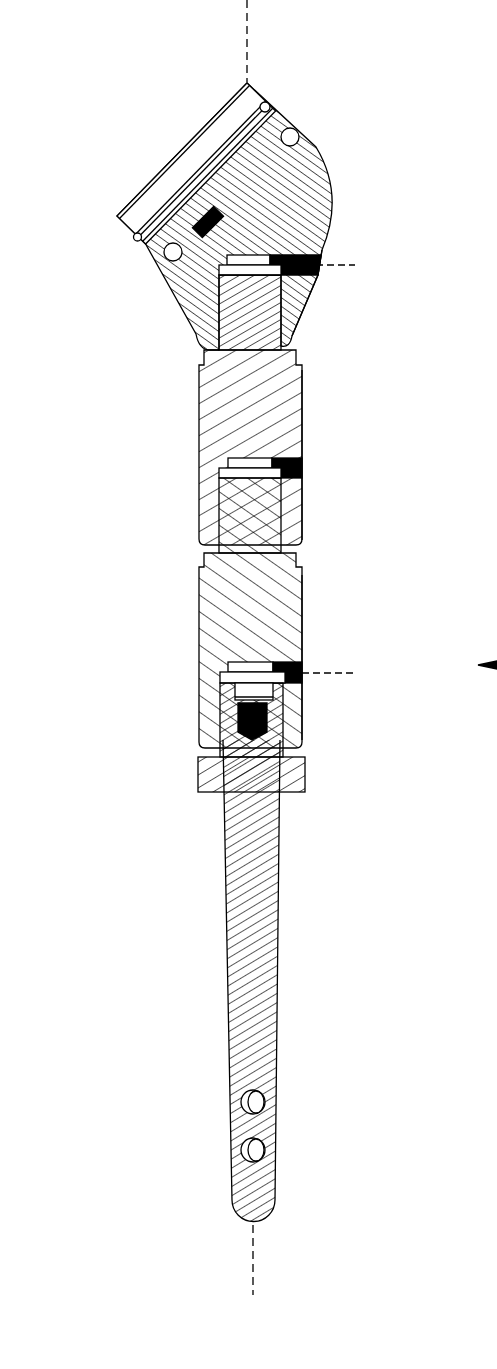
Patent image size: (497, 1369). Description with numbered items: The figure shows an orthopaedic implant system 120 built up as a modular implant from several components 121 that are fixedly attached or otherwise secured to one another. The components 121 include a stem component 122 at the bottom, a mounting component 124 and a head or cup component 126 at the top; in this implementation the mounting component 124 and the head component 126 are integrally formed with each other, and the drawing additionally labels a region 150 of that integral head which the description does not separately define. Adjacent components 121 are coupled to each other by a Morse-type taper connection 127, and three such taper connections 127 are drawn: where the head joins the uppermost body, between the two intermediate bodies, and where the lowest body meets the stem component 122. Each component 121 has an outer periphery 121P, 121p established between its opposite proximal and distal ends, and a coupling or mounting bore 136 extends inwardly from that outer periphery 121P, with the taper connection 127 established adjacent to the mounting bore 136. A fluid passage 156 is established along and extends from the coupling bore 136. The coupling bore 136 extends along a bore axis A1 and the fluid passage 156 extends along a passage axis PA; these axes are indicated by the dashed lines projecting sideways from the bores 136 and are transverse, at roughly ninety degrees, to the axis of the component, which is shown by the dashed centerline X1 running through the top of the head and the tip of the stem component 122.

The orthopaedic implant system 120 is at (122, 120).
The component 121 is at (223, 586).
The stem component 122 is at (222, 930).
The mounting component 124 is at (303, 163).
The head component 126 is at (307, 118).
The taper connection 127 is at (210, 303).
The head body 150 is at (272, 216).
The outer periphery 121P is at (327, 240).
The outer periphery 121p is at (302, 392).
The coupling bore 136 is at (333, 460).
The fluid passage 156 is at (325, 251).
The passage axis PA is at (349, 504).
The bore axis A1 is at (353, 268).
The longitudinal axis X1 is at (247, 36).